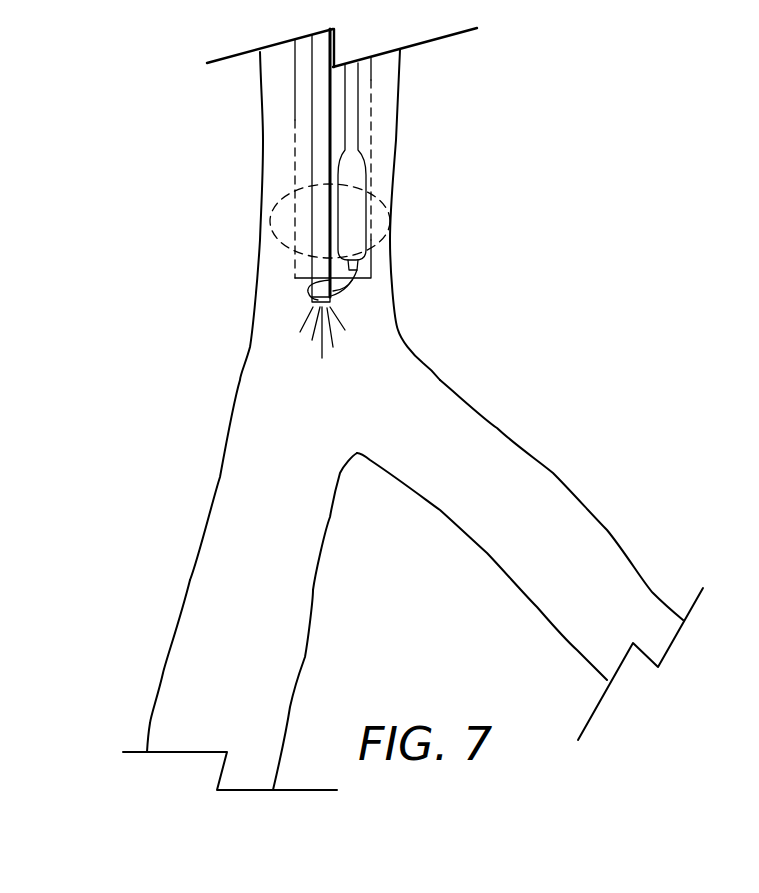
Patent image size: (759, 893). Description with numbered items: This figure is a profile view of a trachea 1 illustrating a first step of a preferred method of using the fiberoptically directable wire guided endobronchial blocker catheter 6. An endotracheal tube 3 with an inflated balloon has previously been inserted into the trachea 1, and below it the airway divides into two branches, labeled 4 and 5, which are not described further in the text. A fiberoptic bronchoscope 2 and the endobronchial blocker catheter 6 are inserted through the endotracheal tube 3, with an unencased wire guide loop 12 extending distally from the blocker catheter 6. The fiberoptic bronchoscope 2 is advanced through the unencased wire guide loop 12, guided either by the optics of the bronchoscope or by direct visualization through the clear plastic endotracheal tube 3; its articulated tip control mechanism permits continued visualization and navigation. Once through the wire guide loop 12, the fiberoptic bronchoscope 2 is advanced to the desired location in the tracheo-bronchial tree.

The trachea 1 is at (395, 157).
The fiberoptic bronchoscope 2 is at (313, 88).
The endotracheal tube 3 is at (370, 147).
The right bronchus 4 is at (497, 428).
The left bronchus 5 is at (308, 633).
The endobronchial blocker catheter 6 is at (355, 85).
The wire guide loop 12 is at (343, 285).